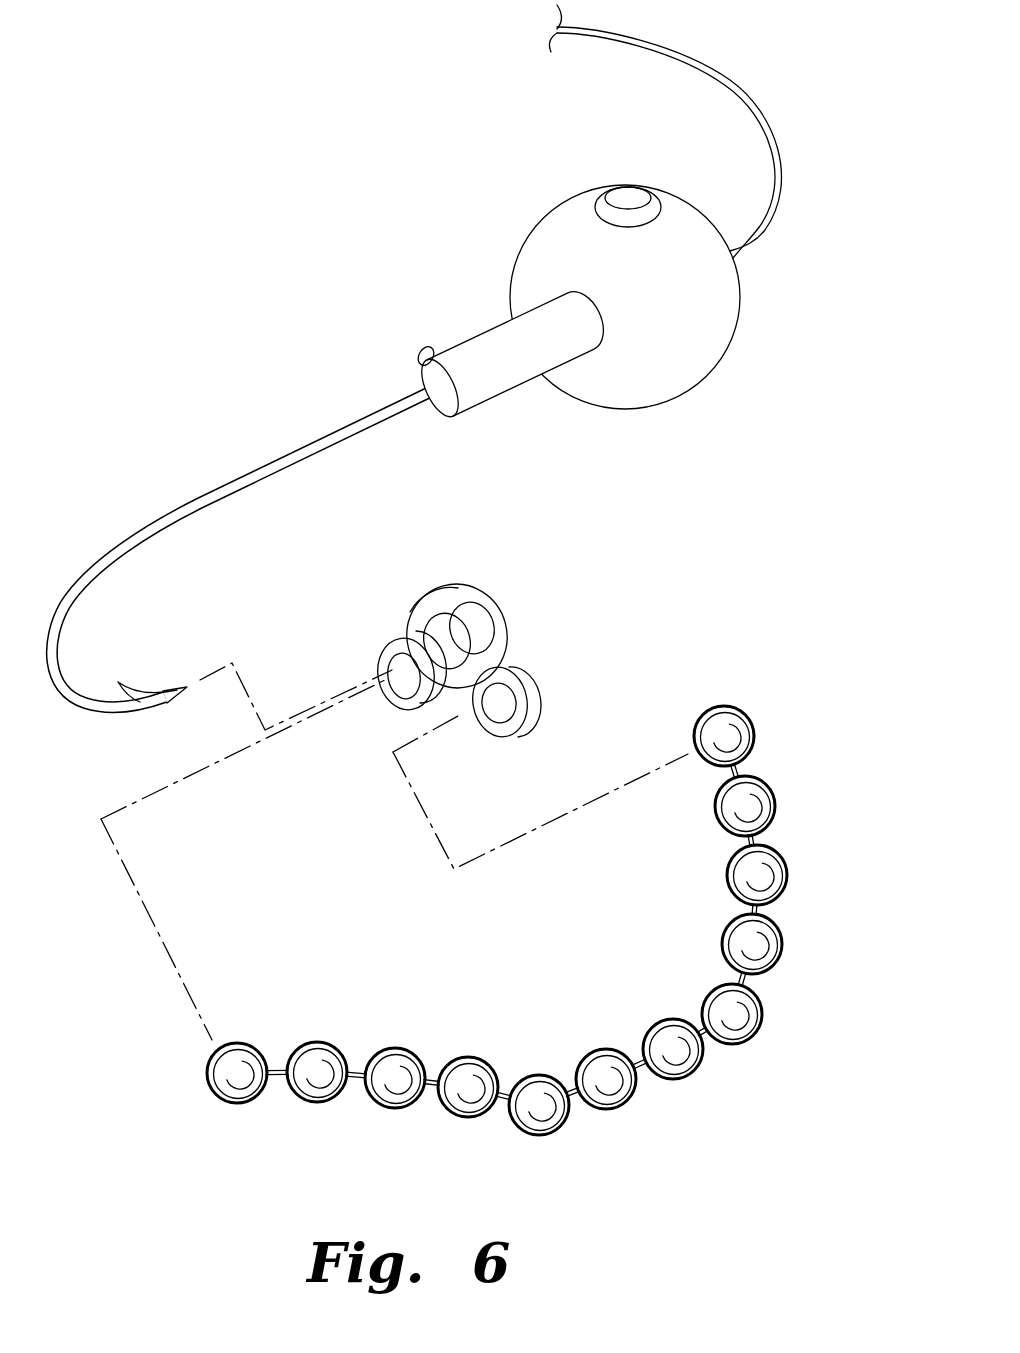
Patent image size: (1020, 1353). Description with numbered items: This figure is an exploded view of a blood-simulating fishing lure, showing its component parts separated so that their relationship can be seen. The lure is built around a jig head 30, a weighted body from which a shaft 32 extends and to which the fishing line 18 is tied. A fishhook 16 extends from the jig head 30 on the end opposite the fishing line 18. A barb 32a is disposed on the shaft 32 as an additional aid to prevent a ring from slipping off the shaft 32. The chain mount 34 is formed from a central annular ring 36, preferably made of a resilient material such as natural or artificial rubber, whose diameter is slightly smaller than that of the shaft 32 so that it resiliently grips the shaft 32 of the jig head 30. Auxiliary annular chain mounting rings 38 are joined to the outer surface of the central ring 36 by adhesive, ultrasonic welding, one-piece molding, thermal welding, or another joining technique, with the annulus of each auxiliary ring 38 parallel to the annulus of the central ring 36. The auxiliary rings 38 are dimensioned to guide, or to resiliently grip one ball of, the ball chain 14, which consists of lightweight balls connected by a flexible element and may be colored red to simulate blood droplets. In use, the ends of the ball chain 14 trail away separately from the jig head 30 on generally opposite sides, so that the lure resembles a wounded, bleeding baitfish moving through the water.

The ball chain 14 is at (581, 1052).
The fishhook 16 is at (212, 497).
The fishing line 18 is at (722, 69).
The jig head 30 is at (731, 348).
The shaft 32 is at (470, 338).
The barb 32a is at (416, 357).
The chain mount 34 is at (490, 603).
The central annular ring 36 is at (508, 632).
The auxiliary annular chain mounting rings 38 is at (540, 690).